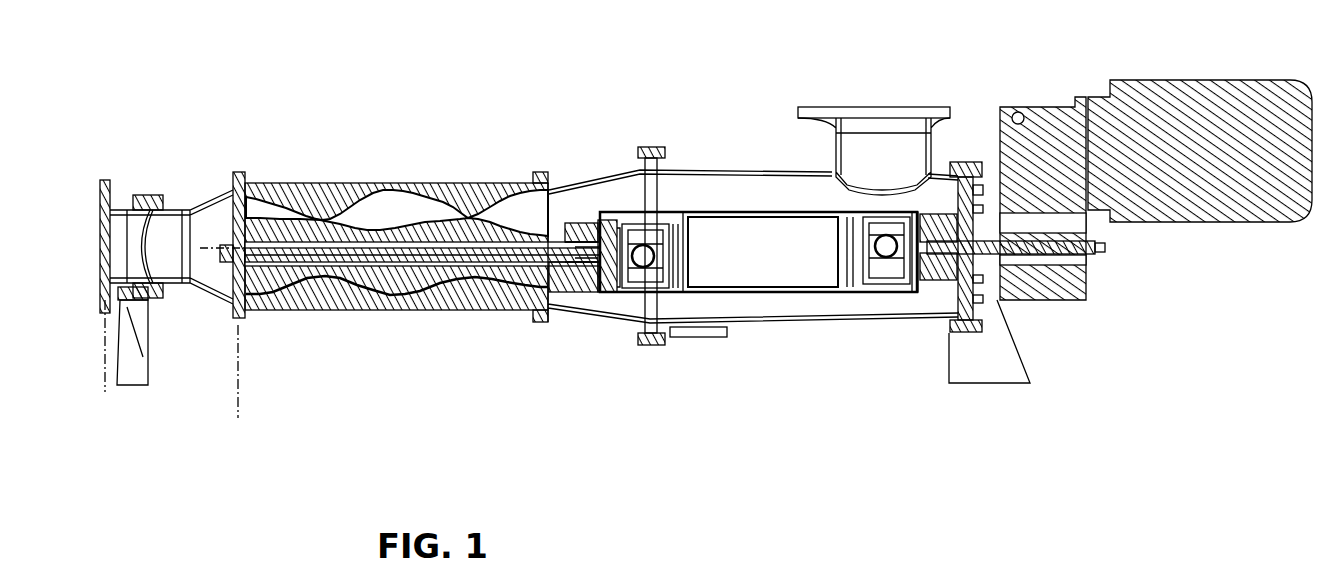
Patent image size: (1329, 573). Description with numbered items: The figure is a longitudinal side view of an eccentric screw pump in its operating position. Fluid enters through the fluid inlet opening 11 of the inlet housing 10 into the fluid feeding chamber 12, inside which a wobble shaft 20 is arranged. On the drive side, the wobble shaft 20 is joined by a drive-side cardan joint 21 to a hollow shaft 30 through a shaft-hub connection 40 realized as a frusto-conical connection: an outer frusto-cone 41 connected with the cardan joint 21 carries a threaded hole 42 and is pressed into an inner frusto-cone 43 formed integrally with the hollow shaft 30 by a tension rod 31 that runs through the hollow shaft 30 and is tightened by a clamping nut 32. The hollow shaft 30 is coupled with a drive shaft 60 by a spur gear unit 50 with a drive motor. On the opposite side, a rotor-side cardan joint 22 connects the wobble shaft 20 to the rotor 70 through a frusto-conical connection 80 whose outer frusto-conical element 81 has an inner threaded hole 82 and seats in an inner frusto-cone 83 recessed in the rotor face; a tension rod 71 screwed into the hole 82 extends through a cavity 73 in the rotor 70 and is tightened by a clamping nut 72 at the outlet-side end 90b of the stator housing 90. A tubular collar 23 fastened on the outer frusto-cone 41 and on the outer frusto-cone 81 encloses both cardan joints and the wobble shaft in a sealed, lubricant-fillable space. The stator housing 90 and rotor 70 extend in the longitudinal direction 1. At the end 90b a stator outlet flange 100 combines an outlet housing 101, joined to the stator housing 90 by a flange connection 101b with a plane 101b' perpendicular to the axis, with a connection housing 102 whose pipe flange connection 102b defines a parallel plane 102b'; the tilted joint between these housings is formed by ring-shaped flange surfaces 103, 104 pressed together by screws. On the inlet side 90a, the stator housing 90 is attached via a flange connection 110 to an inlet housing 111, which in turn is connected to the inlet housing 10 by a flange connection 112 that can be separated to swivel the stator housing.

The longitudinal direction 1 is at (408, 240).
The inlet housing 10 is at (724, 170).
The fluid inlet opening 11 is at (887, 104).
The fluid feeding chamber 12 is at (753, 204).
The wobble shaft 20 is at (780, 292).
The drive-side cardan joint 21 is at (885, 275).
The rotor-side cardan joint 22 is at (640, 298).
The collar 23 is at (781, 200).
The hollow shaft 30 is at (985, 262).
The tension rod 31 is at (1050, 248).
The clamping nut 32 is at (1097, 250).
The shaft-hub connection 40 is at (938, 199).
The outer frusto-cone 41 is at (922, 283).
The threaded hole 42 is at (938, 263).
The inner frusto-cone 43 is at (952, 285).
The spur gear unit 50 is at (1044, 143).
The drive shaft 60 is at (1133, 133).
The rotor 70 is at (540, 285).
The tension rod 71 is at (410, 270).
The clamping nut 72 is at (218, 200).
The cavity 73 is at (363, 265).
The frusto-conical connection 80 is at (583, 208).
The outer frusto-conical element 81 is at (614, 292).
The inner threaded hole 82 is at (600, 292).
The inner frusto-cone 83 is at (590, 287).
The stator housing 90 is at (342, 197).
The inlet side 90a is at (596, 152).
The outlet-side end 90b is at (205, 158).
The stator outlet flange 100 is at (150, 183).
The outlet housing 101 is at (201, 290).
The flange connection 101b is at (280, 114).
The flange connection plane 101b' is at (276, 397).
The connection housing 102 is at (115, 227).
The flange connection 102b is at (95, 305).
The flange connection plane 102b' is at (60, 346).
The flange surface 103 is at (170, 293).
The flange surface 104 is at (160, 288).
The flange connection 110 is at (542, 172).
The inlet housing 111 is at (615, 170).
The flange connection 112 is at (656, 146).